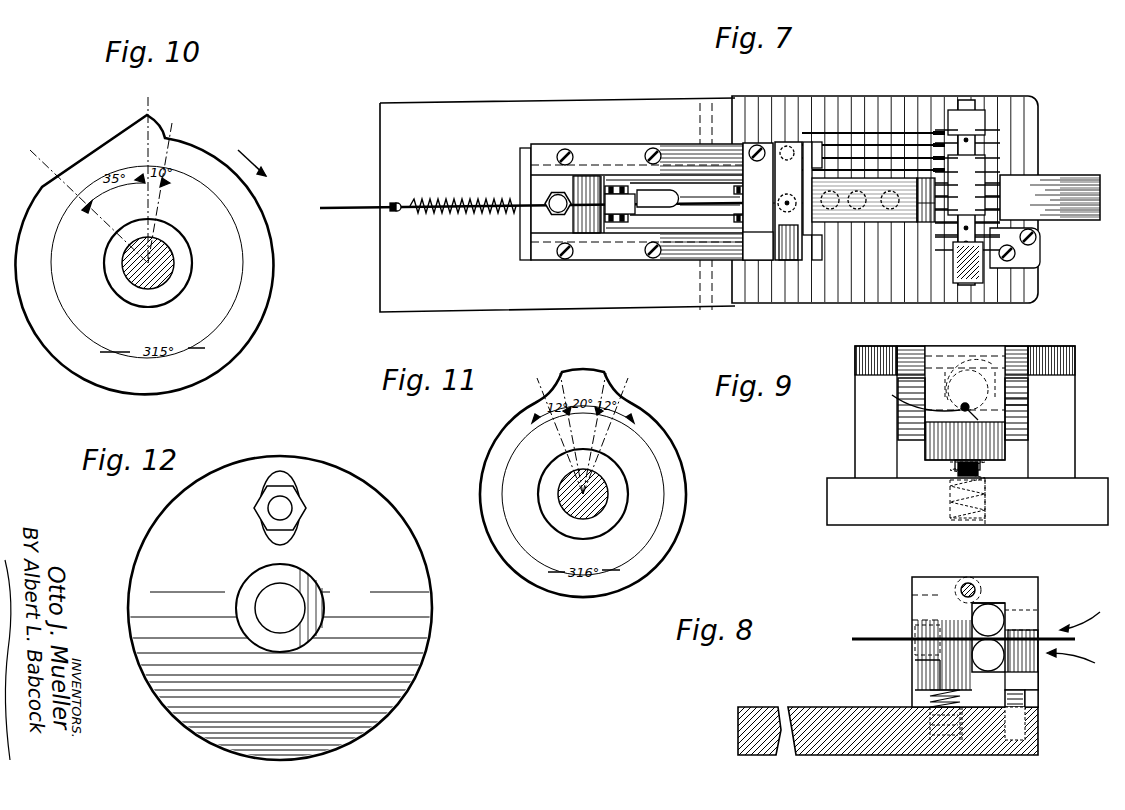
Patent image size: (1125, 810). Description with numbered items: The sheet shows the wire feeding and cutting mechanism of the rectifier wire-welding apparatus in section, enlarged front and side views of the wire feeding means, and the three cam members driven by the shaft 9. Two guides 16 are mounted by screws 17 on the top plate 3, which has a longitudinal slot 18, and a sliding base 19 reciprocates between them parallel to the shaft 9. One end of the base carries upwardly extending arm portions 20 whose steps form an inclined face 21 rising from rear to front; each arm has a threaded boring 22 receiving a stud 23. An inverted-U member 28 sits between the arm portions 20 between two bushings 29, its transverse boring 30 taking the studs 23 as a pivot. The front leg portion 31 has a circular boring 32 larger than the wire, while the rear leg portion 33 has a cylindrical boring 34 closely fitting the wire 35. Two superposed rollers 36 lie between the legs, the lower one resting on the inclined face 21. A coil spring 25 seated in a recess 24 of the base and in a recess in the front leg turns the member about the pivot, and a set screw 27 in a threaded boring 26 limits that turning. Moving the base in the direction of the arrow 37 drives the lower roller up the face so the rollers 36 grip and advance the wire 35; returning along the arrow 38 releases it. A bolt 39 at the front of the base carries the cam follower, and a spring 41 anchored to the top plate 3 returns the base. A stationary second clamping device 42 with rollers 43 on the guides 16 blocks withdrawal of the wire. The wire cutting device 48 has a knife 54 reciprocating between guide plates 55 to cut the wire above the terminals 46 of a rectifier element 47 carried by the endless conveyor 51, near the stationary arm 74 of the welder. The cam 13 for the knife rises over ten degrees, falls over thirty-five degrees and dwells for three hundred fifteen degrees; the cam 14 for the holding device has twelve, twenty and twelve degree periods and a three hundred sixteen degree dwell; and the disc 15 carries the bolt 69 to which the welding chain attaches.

In FIG. 7, the top plate 3 is at (567, 300).
In FIG. 10, the shaft 9 is at (172, 258).
In FIG. 12, the shaft 9 is at (296, 601).
In FIG. 11, the shaft 9 is at (605, 485).
In FIG. 10, the cam 13 is at (232, 353).
In FIG. 11, the cam 14 is at (550, 580).
In FIG. 12, the disc 15 is at (400, 676).
In FIG. 7, the guides 16 is at (602, 175).
In FIG. 7, the screws 17 is at (565, 149).
In FIG. 7, the longitudinal slot 18 is at (668, 210).
In FIG. 7, the sliding base 19 is at (537, 226).
In FIG. 9, the sliding base 19 is at (830, 506).
In FIG. 8, the sliding base 19 is at (809, 707).
In FIG. 7, the arm portions 20 is at (640, 183).
In FIG. 9, the arm portions 20 is at (862, 420).
In FIG. 8, the arm portions 20 is at (1028, 698).
In FIG. 7, the inclined face 21 is at (600, 185).
In FIG. 9, the inclined face 21 is at (906, 447).
In FIG. 8, the inclined face 21 is at (1030, 672).
In FIG. 9, the threaded boring 22 is at (875, 350).
In FIG. 8, the threaded boring 22 is at (978, 584).
In FIG. 9, the studs 23 is at (979, 364).
In FIG. 8, the studs 23 is at (962, 584).
In FIG. 9, the recess 24 is at (985, 520).
In FIG. 8, the recess 24 is at (962, 742).
In FIG. 9, the coil spring 25 is at (986, 465).
In FIG. 8, the coil spring 25 is at (930, 698).
In FIG. 9, the threaded boring 26 is at (958, 522).
In FIG. 8, the threaded boring 26 is at (1028, 739).
In FIG. 9, the set screw 27 is at (958, 480).
In FIG. 8, the set screw 27 is at (1035, 706).
In FIG. 7, the member 28 is at (740, 195).
In FIG. 9, the member 28 is at (1012, 396).
In FIG. 8, the member 28 is at (1028, 590).
In FIG. 7, the bushings 29 is at (612, 186).
In FIG. 9, the bushings 29 is at (912, 348).
In FIG. 9, the transverse boring 30 is at (993, 352).
In FIG. 8, the transverse boring 30 is at (976, 594).
In FIG. 8, the front leg portion 31 is at (915, 604).
In FIG. 9, the circular boring 32 is at (978, 420).
In FIG. 8, the circular boring 32 is at (930, 637).
In FIG. 9, the rear leg portion 33 is at (936, 448).
In FIG. 8, the rear leg portion 33 is at (1030, 615).
In FIG. 9, the cylindrical boring 34 is at (962, 404).
In FIG. 8, the cylindrical boring 34 is at (1030, 632).
In FIG. 7, the wire 35 is at (345, 207).
In FIG. 9, the wire 35 is at (915, 398).
In FIG. 8, the wire 35 is at (1075, 639).
In FIG. 7, the rollers 36 is at (616, 232).
In FIG. 9, the rollers 36 is at (1006, 408).
In FIG. 8, the rollers 36 is at (978, 620).
In FIG. 8, the recess / arrow 37 is at (1085, 611).
In FIG. 8, the arrow 38 is at (1081, 661).
In FIG. 7, the bolt 39 is at (547, 200).
In FIG. 7, the spring 41 is at (455, 206).
In FIG. 7, the second clamping device 42 is at (757, 143).
In FIG. 7, the rollers 43 is at (780, 260).
In FIG. 7, the terminals 46 is at (1000, 158).
In FIG. 7, the rectifier element 47 is at (957, 262).
In FIG. 7, the wire cutting device 48 is at (779, 140).
In FIG. 7, the endless conveyor 51 is at (966, 290).
In FIG. 7, the knife 54 is at (813, 152).
In FIG. 7, the guide plates 55 is at (820, 150).
In FIG. 12, the bolt 69 is at (298, 510).
In FIG. 7, the stationary arm 74 is at (1060, 215).